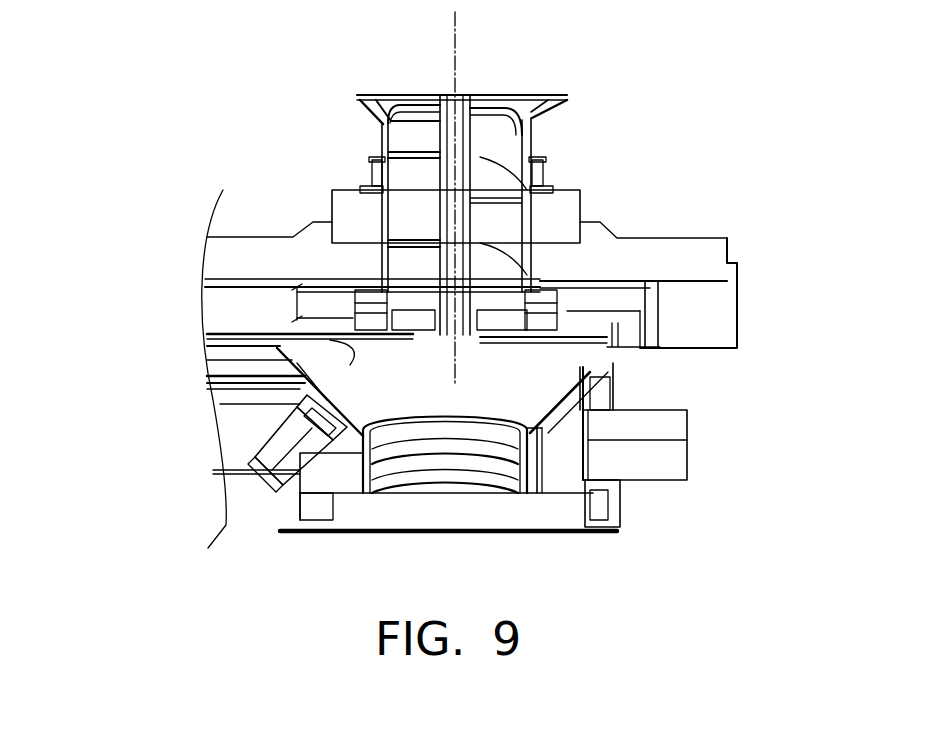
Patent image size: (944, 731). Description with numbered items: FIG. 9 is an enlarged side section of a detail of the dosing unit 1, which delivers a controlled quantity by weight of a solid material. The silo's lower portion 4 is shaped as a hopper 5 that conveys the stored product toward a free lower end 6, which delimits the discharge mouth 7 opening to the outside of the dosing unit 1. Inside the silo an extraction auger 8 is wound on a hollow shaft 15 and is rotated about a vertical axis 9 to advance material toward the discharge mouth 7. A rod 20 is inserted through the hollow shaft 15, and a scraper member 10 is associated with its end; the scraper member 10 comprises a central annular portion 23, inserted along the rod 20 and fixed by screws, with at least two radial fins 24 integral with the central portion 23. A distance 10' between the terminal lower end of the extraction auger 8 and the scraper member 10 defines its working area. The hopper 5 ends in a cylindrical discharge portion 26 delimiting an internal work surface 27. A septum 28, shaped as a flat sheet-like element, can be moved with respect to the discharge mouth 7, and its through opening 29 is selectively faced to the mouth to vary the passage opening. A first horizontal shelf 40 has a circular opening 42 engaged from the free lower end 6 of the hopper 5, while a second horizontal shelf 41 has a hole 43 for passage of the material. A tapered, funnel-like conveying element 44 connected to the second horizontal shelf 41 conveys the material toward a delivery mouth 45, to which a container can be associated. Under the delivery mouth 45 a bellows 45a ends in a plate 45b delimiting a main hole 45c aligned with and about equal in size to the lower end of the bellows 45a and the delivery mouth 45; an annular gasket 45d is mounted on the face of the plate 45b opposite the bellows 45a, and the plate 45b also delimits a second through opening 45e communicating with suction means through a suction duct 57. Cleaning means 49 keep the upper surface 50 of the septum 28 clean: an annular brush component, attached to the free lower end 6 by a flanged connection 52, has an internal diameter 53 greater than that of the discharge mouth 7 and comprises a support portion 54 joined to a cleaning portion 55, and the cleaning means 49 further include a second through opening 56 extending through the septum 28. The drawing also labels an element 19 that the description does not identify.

The dosing unit 1 is at (800, 112).
The lower portion 4 is at (300, 113).
The hopper 5 is at (543, 107).
The free lower end 6 is at (535, 275).
The discharge mouth 7 is at (367, 395).
The extraction auger 8 is at (407, 143).
The vertical axis 9 is at (458, 30).
The scraper member 10 is at (310, 157).
The distance 10' is at (356, 309).
The hollow shaft 15 is at (413, 183).
The upper flange 19 is at (392, 98).
The rod 20 is at (478, 112).
The central annular portion 23 is at (437, 352).
The radial fins 24 is at (272, 478).
The discharge portion 26 is at (419, 302).
The work surface 27 is at (527, 157).
The septum 28 is at (207, 307).
The through opening 29 is at (313, 328).
The first horizontal shelf 40 is at (207, 238).
The second horizontal shelf 41 is at (740, 337).
The circular opening 42 is at (495, 310).
The hole 43 is at (640, 355).
The conveying element 44 is at (627, 362).
The delivery mouth 45 is at (489, 436).
The bellows 45a is at (535, 470).
The plate 45b is at (350, 495).
The main hole 45c is at (505, 494).
The annular gasket 45d is at (625, 500).
The second through opening 45e is at (600, 500).
The cleaning means 49 is at (350, 378).
The upper surface 50 is at (238, 238).
The flanged connection 52 is at (577, 338).
The internal diameter 53 is at (492, 330).
The support portion 54 is at (285, 338).
The cleaning portion 55 is at (230, 472).
The second through opening 56 is at (618, 310).
The suction duct 57 is at (688, 467).